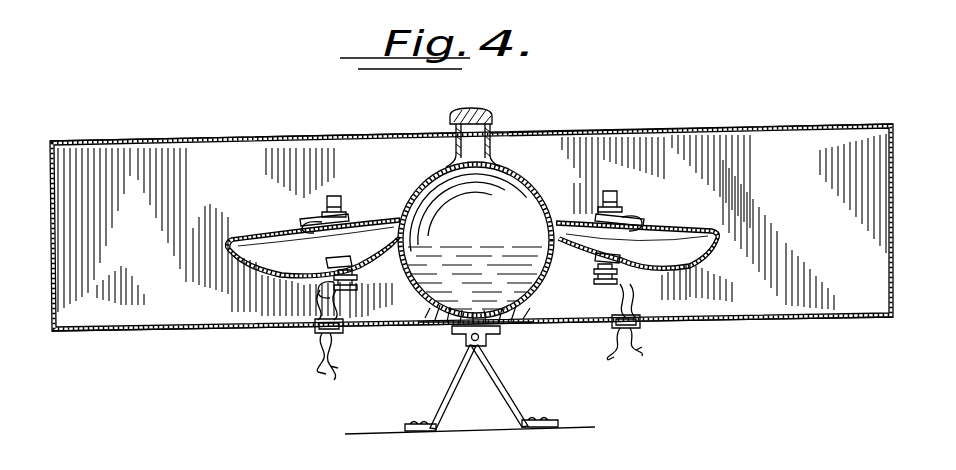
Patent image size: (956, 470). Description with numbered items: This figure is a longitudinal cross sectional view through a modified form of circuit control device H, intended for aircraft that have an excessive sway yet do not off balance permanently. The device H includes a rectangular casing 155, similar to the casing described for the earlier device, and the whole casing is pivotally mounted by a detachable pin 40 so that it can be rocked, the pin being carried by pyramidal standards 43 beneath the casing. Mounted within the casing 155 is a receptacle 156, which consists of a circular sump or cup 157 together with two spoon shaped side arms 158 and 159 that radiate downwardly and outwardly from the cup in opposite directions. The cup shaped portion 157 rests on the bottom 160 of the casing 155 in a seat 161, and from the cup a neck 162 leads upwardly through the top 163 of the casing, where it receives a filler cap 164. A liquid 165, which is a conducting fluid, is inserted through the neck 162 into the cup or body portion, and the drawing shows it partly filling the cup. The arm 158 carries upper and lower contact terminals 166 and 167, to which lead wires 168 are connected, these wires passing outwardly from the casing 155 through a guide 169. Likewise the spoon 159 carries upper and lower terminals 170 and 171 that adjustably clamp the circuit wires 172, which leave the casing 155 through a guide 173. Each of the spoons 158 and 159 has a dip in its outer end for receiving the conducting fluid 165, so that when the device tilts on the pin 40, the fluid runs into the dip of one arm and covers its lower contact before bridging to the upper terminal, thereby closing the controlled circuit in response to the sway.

The rectangular casing 155 is at (195, 163).
The receptacle 156 is at (541, 186).
The circular sump or cup 157 is at (560, 300).
The spoon shaped side arm 158 is at (264, 251).
The spoon shaped side arm 159 is at (720, 227).
The bottom of casing 160 is at (751, 319).
The seat 161 is at (547, 300).
The neck 162 is at (455, 148).
The top of casing 163 is at (523, 134).
The filler cap 164 is at (473, 117).
The liquid 165 is at (443, 268).
The upper contact terminal 166 is at (338, 207).
The lower contact terminal 167 is at (358, 290).
The lead wires 168 is at (333, 372).
The guide 169 is at (318, 328).
The upper terminal 170 is at (620, 210).
The lower terminal 171 is at (605, 280).
The circuit wires 172 is at (633, 297).
The guide 173 is at (638, 328).
The detachable pin 40 is at (470, 338).
The pyramidal standards 43 is at (446, 398).
The circuit control device H is at (628, 137).